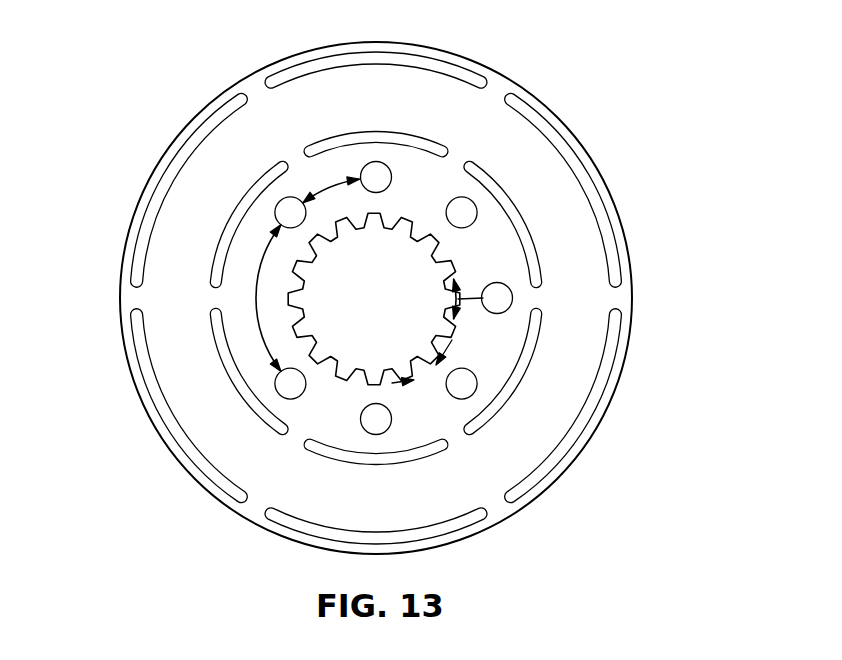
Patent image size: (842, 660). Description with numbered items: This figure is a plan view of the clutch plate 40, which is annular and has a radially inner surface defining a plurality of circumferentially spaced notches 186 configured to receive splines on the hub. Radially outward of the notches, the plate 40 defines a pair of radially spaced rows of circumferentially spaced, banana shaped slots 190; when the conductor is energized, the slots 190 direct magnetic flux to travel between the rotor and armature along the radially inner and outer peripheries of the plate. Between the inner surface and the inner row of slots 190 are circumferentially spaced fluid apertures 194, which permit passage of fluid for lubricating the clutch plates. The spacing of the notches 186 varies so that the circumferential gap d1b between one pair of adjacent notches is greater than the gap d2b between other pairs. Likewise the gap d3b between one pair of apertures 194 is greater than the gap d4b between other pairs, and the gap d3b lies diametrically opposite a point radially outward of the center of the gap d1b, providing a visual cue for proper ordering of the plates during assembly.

The clutch plate 40 is at (600, 172).
The banana shaped slots 190 is at (164, 407).
The fluid apertures 194 is at (376, 177).
The notches 186 is at (336, 367).
The circumferential gap between a pair of adjacent notches d1b is at (486, 292).
The circumferential gap between other pairs of notches d2b is at (392, 384).
The circumferential gap between a pair of apertures d3b is at (257, 299).
The circumferential gap between other pairs of apertures d4b is at (331, 182).